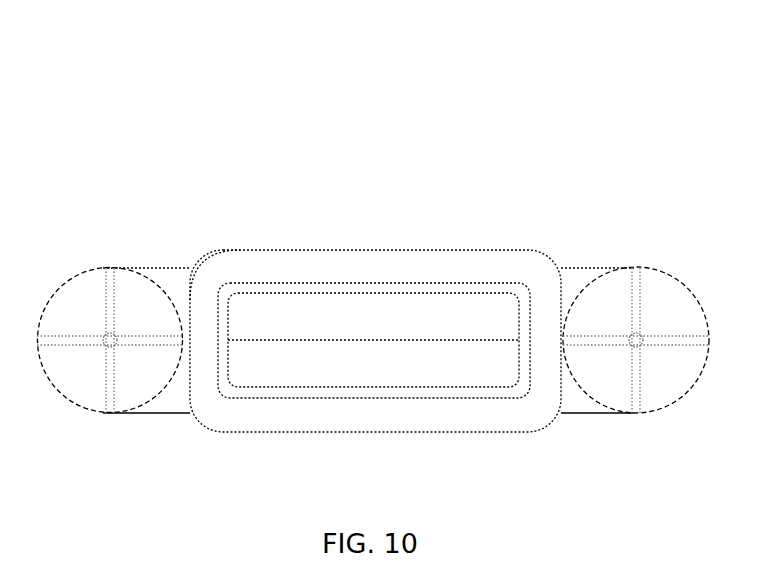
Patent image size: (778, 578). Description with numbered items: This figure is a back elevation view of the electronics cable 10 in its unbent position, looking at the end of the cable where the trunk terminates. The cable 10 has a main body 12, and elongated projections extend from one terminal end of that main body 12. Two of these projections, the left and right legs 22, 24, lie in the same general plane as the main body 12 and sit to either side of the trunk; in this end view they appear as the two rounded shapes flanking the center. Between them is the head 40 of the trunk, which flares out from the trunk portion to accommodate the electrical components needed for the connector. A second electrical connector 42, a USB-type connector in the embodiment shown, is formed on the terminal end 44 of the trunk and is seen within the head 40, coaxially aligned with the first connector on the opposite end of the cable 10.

The cable 10 is at (258, 131).
The main body 12 is at (572, 266).
The left leg 22 is at (57, 287).
The right leg 24 is at (680, 283).
The head 40 is at (385, 248).
The second electrical connector 42 is at (275, 399).
The terminal end 44 is at (217, 272).